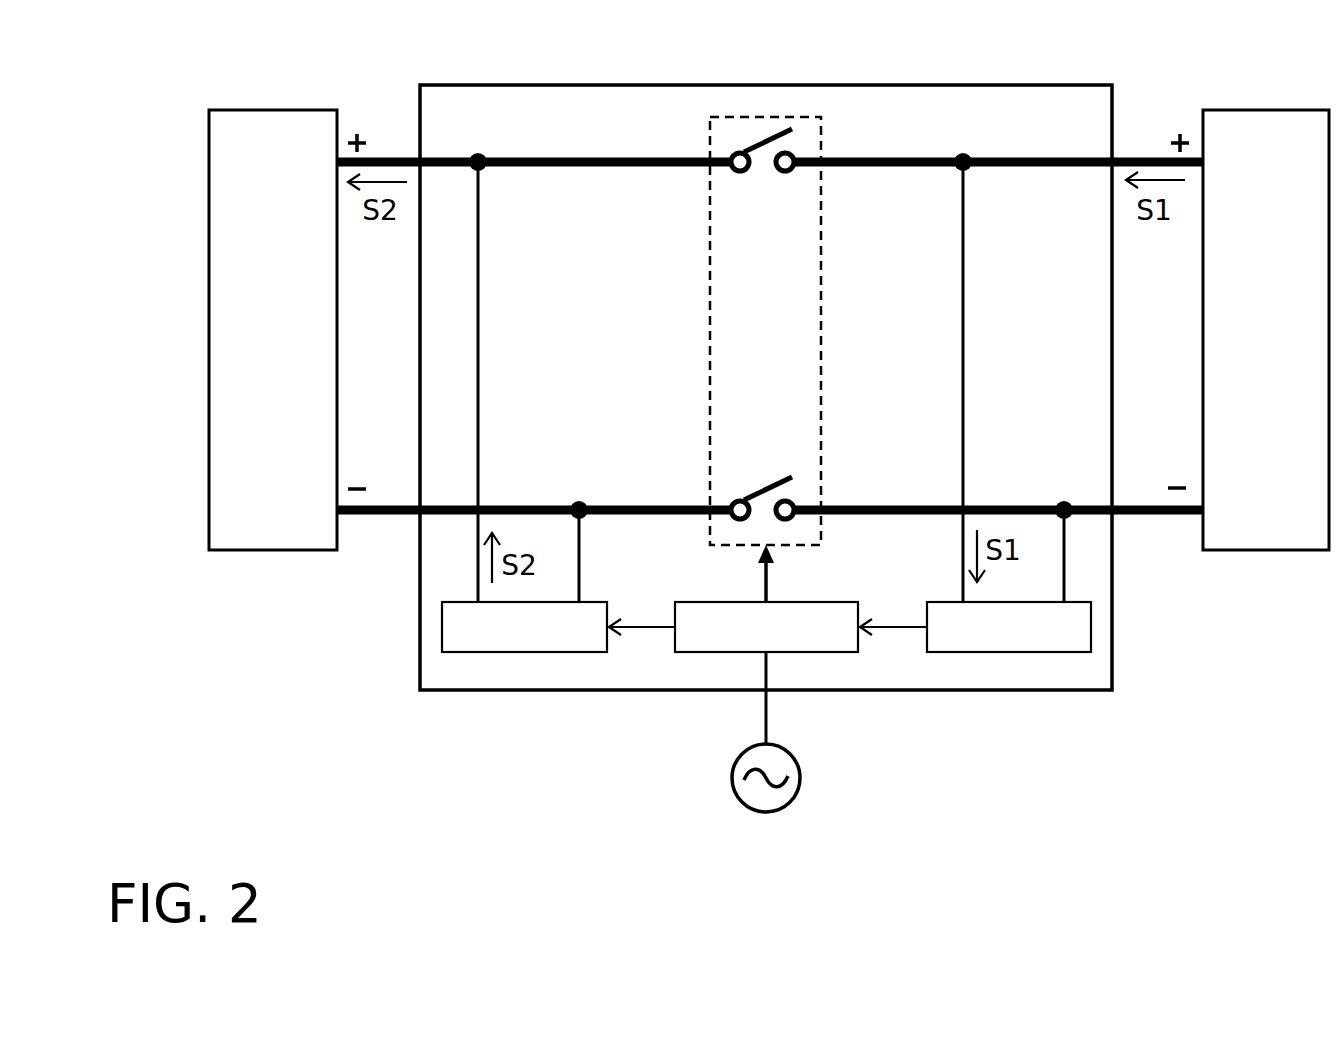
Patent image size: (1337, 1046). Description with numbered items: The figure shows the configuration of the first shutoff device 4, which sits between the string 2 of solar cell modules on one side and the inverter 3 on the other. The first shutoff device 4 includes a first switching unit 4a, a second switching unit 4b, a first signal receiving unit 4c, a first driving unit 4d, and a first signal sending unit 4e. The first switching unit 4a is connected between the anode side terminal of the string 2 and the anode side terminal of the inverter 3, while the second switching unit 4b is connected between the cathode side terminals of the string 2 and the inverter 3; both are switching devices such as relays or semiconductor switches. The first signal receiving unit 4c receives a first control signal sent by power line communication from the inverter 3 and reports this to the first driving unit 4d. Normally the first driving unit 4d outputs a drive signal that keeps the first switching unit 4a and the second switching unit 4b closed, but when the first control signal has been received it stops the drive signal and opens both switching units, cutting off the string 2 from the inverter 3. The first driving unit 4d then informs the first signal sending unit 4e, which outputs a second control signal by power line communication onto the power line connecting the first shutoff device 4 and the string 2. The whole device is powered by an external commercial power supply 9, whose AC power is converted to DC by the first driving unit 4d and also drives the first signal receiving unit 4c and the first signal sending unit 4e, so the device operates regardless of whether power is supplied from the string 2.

The string 2 is at (273, 550).
The inverter 3 is at (1258, 550).
The first shutoff device 4 is at (1045, 85).
The first switching unit 4a is at (803, 132).
The second switching unit 4b is at (800, 492).
The first signal receiving unit 4c is at (1015, 652).
The first driving unit 4d is at (820, 652).
The first signal sending unit 4e is at (530, 652).
The commercial power supply 9 is at (765, 813).